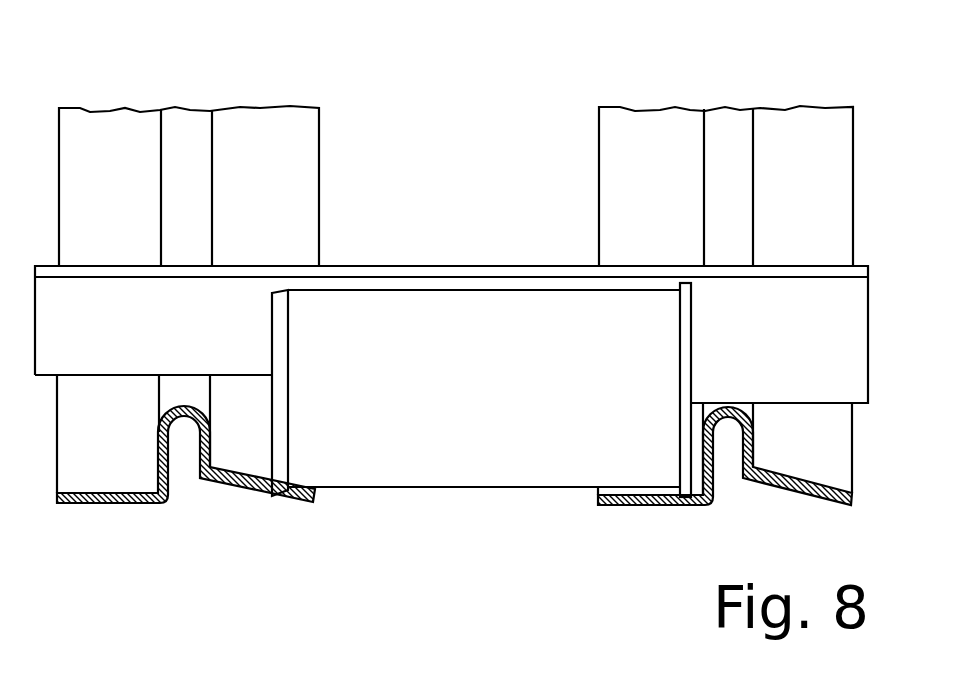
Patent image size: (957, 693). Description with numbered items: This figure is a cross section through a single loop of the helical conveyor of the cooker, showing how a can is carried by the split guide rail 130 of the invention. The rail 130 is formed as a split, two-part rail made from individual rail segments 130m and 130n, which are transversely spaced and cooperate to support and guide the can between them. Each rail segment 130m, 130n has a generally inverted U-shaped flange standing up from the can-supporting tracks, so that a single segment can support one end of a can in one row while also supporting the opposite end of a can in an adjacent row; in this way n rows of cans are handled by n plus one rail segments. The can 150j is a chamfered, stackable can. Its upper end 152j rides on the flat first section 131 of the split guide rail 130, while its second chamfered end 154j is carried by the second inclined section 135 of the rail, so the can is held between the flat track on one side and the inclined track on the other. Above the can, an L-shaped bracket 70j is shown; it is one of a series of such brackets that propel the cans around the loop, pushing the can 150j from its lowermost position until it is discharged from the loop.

The split guide rail 130 is at (458, 255).
The rail segment 130m is at (203, 89).
The rail segment 130n is at (729, 88).
The L-shaped bracket 70j is at (415, 275).
The can 150j is at (538, 456).
The second chamfered end of can 154j is at (309, 292).
The upper end of can 152j is at (657, 290).
The inclined section 135 is at (288, 495).
The flat first section 131 is at (658, 505).